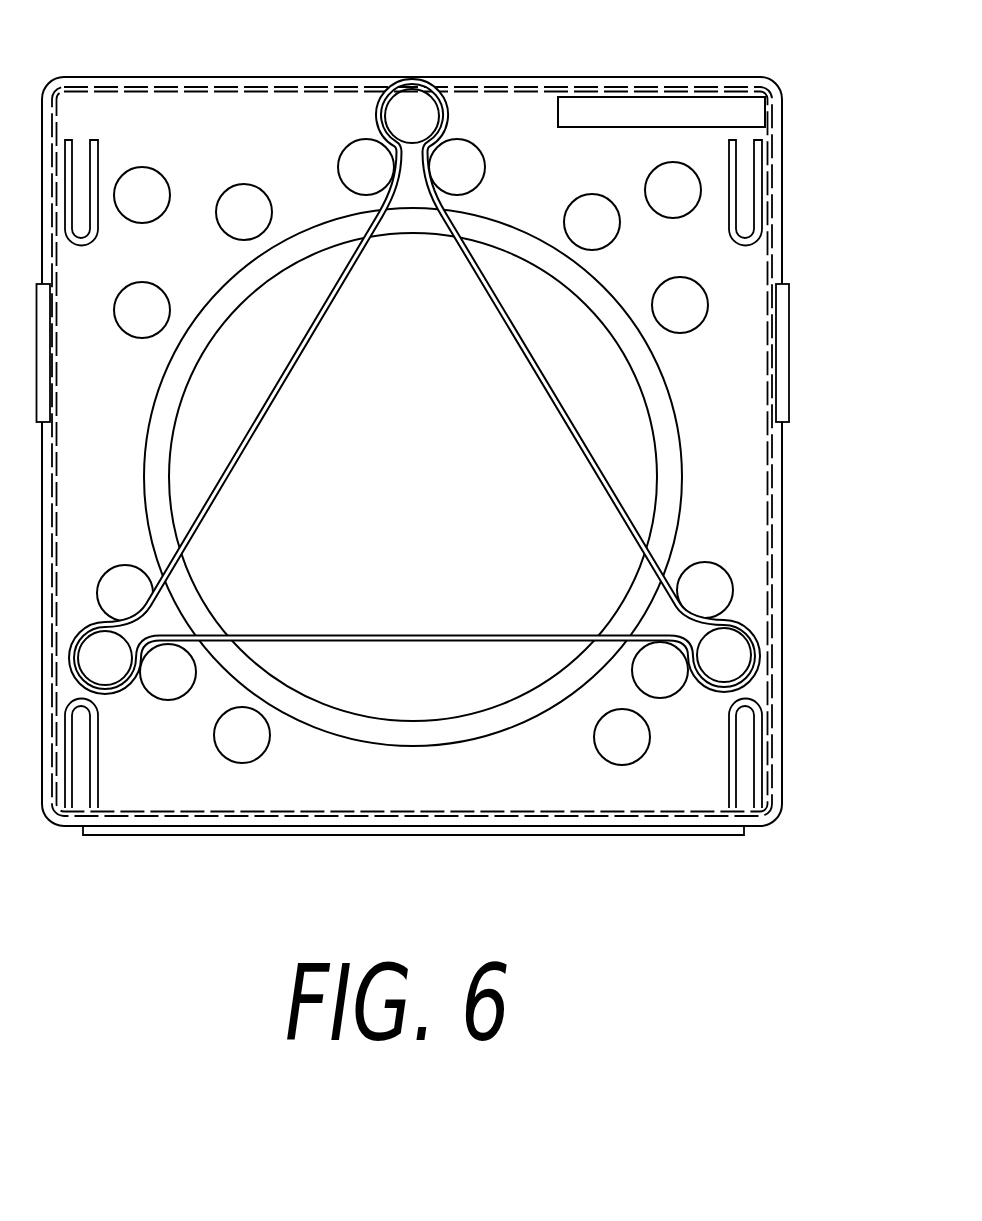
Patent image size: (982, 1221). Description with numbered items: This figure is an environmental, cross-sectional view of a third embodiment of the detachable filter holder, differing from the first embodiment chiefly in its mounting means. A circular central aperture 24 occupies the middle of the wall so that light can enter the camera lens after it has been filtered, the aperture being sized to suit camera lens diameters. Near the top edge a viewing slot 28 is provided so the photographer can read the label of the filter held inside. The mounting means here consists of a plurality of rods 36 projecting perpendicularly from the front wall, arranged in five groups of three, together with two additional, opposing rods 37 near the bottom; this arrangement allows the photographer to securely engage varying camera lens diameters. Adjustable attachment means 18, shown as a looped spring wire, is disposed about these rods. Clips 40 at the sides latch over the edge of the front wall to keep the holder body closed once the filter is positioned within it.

The adjustable attachment means 18 is at (558, 412).
The central aperture 24 is at (300, 696).
The viewing slot 28 is at (534, 108).
The rods 36 is at (352, 167).
The opposing rods 37 is at (242, 763).
The clips 40 is at (789, 350).